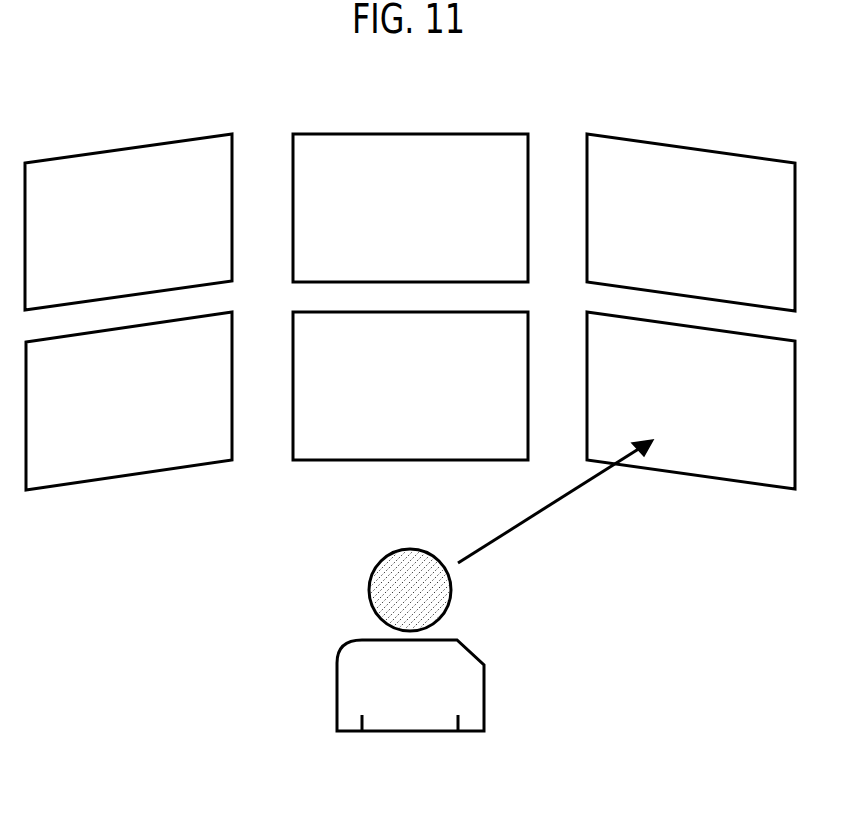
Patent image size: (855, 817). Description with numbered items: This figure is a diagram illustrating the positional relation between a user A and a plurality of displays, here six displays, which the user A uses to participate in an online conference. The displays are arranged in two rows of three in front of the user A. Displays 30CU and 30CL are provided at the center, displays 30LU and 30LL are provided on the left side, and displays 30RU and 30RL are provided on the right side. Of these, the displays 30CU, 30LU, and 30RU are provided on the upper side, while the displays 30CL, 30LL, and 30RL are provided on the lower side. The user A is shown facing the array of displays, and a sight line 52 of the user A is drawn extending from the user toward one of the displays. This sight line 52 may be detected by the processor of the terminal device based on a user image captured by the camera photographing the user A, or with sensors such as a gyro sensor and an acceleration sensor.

The display 30LU is at (118, 147).
The display 30LL is at (143, 476).
The display 30CU is at (410, 132).
The display 30CL is at (409, 462).
The display 30RU is at (701, 148).
The display 30RL is at (705, 480).
The user A is at (452, 590).
The sight line 52 is at (512, 530).